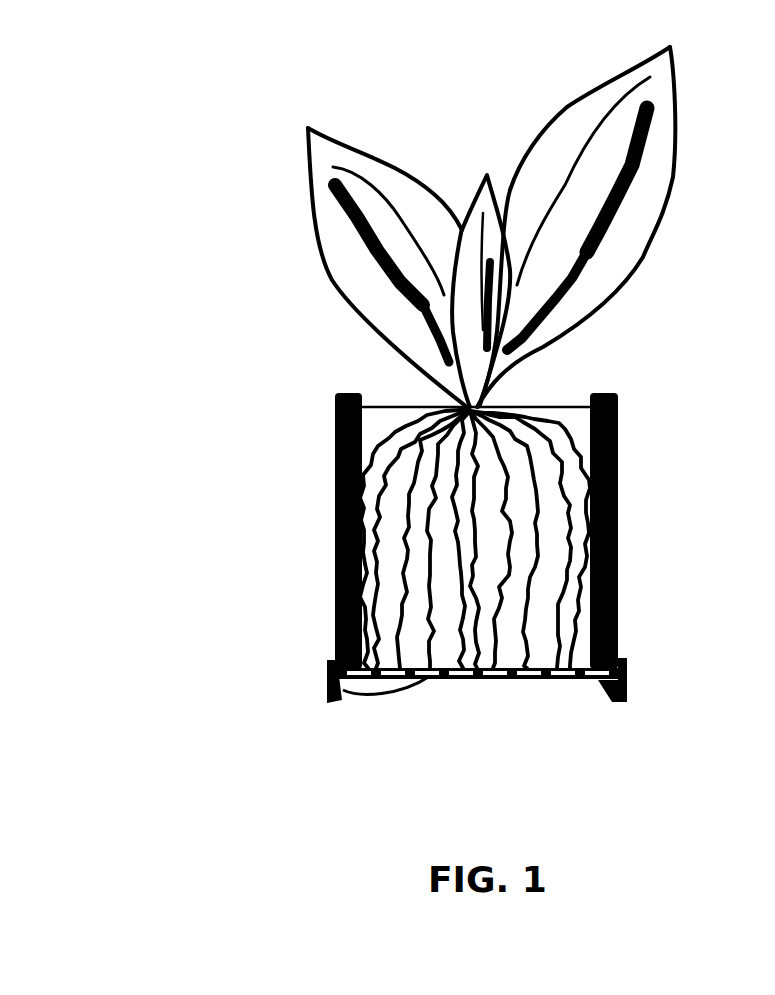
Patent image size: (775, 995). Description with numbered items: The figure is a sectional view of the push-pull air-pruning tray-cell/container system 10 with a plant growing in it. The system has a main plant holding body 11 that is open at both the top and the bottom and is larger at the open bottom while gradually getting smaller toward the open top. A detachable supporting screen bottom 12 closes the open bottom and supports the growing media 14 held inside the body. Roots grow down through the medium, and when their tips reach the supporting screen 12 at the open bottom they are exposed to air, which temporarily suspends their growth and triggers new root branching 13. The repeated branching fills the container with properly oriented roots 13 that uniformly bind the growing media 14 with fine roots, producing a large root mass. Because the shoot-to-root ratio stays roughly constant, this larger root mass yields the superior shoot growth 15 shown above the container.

The push-pull air-pruning tray-cell/container system 10 is at (252, 347).
The main plant holding body 11 is at (335, 518).
The detachable supporting screen bottom 12 is at (327, 688).
The root branching 13 is at (455, 625).
The growing media 14 is at (600, 417).
The shoot growth 15 is at (653, 137).